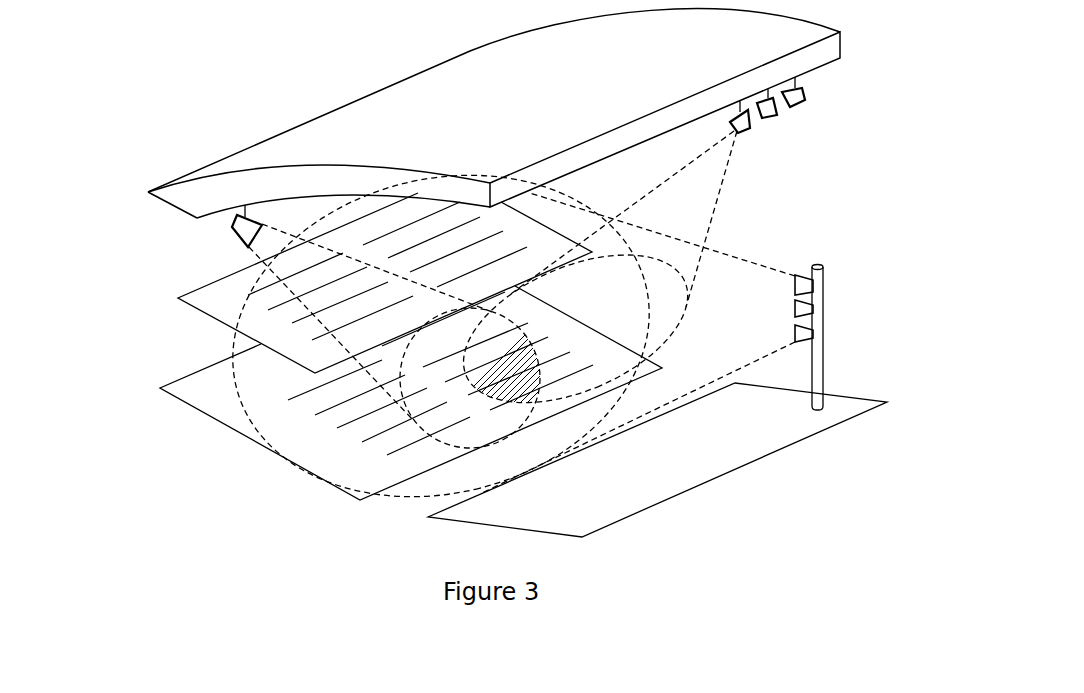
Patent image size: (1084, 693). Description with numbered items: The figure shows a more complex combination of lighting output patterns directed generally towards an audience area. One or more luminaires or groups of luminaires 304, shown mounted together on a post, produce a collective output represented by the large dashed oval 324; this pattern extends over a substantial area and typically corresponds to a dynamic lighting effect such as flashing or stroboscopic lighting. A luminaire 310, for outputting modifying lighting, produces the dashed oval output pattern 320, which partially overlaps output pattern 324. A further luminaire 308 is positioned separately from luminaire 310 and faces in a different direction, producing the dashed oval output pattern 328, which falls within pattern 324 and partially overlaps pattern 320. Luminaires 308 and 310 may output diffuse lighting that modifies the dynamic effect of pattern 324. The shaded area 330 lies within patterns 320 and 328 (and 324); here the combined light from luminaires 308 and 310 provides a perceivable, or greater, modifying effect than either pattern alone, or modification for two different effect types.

The luminaires 304 is at (838, 306).
The luminaire 308 is at (230, 237).
The luminaire 310 is at (752, 127).
The output pattern 320 is at (663, 260).
The output pattern 324 is at (232, 353).
The output pattern 328 is at (390, 448).
The shaded area 330 is at (540, 377).